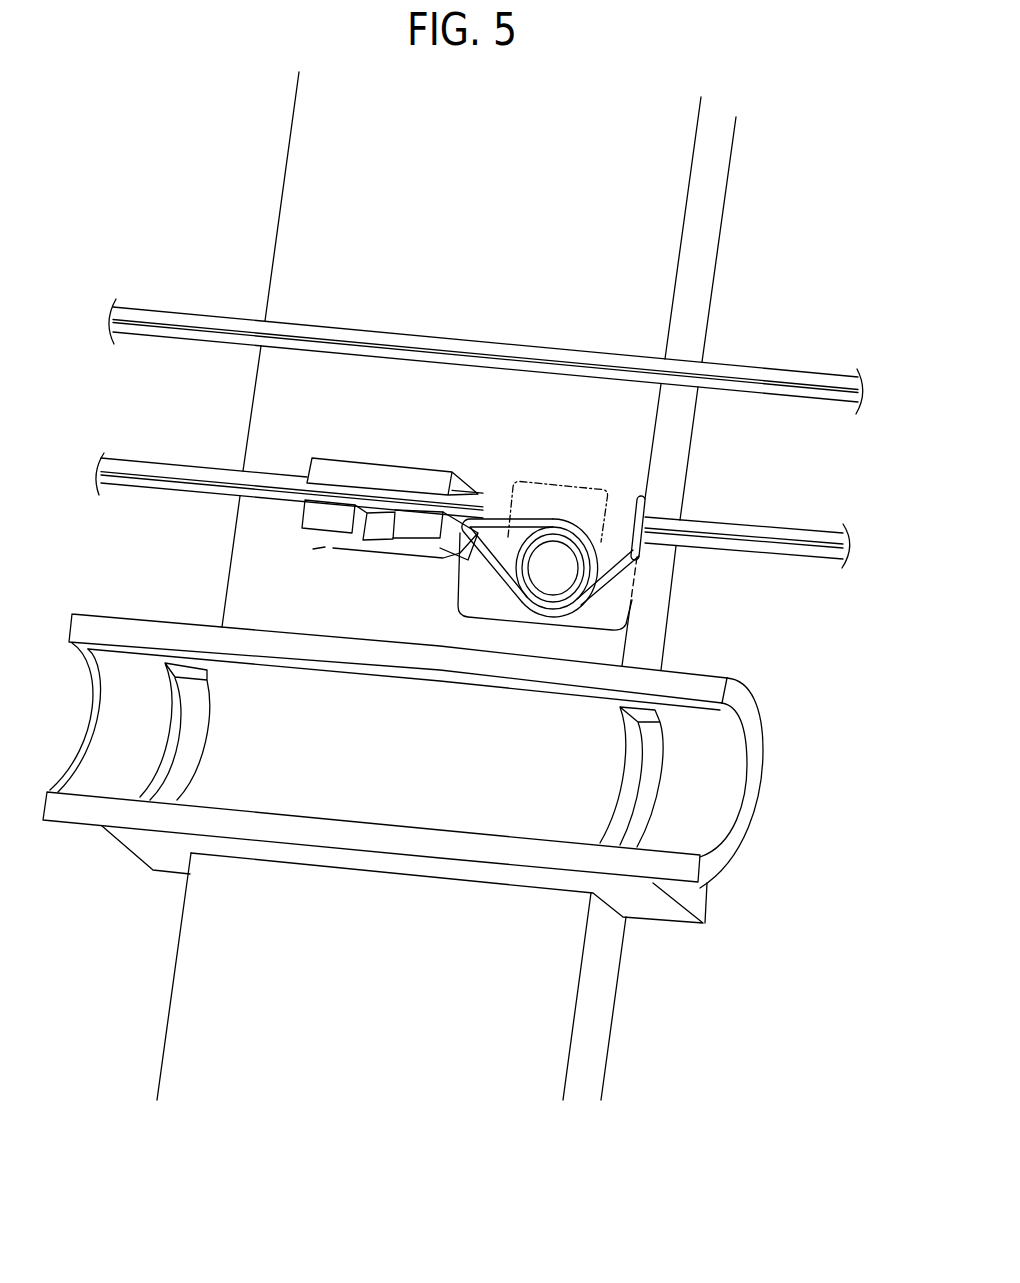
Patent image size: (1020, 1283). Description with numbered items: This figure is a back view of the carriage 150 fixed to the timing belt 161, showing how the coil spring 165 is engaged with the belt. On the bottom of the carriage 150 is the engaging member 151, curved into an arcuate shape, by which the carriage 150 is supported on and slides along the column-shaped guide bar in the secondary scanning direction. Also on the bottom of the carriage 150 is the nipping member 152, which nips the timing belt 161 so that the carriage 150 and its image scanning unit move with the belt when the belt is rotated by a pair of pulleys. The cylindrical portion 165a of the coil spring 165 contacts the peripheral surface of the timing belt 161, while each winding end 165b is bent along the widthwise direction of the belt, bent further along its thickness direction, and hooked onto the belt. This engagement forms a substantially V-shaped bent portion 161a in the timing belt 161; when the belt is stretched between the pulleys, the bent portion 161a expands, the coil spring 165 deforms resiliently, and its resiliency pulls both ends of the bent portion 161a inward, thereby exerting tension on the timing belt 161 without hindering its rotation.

The carriage 150 is at (620, 1033).
The engaging member 151 is at (748, 710).
The nipping member 152 is at (359, 473).
The timing belt 161 is at (787, 549).
The bent portion 161a is at (551, 627).
The coil spring 165 is at (645, 451).
The cylindrical portion 165a is at (610, 491).
The winding end 165b is at (476, 512).